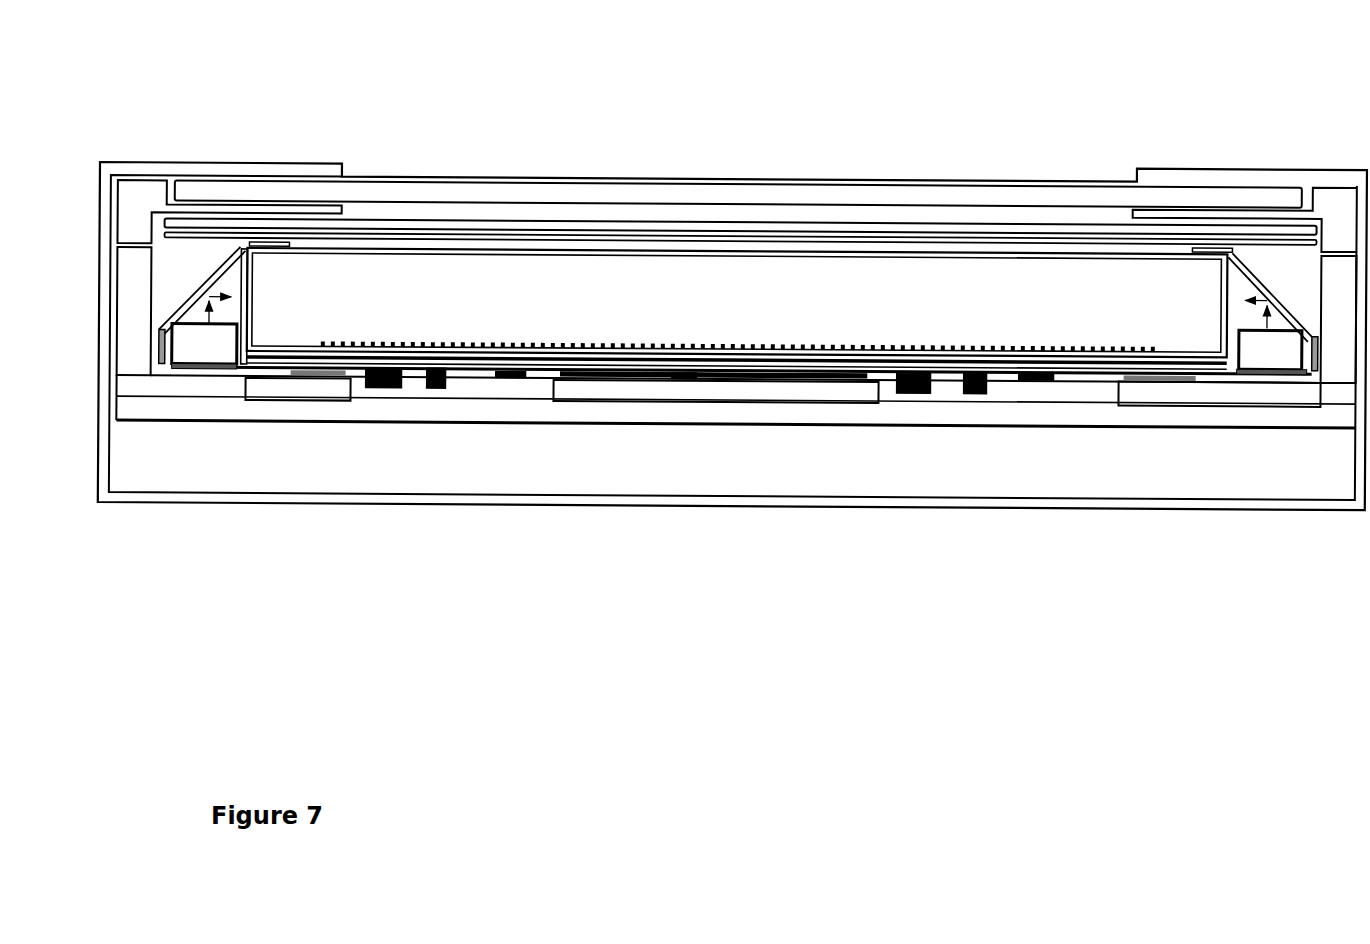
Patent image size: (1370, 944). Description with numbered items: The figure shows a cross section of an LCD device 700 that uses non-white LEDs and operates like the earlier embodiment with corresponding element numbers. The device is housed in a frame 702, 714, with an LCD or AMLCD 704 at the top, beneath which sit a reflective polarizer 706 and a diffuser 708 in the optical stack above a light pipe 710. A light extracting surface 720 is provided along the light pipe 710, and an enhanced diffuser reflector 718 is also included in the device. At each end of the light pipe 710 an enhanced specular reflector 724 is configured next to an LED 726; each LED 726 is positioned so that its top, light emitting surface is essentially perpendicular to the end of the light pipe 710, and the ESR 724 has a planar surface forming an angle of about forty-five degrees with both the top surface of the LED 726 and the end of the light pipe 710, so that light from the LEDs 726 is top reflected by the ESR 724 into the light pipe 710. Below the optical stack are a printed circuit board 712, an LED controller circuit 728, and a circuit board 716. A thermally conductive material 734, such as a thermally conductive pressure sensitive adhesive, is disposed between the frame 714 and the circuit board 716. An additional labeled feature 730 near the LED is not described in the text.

The LCD device 700 is at (1163, 43).
The frame 702 is at (320, 508).
The LCD or AMLCD 704 is at (980, 174).
The reflective polarizer 706 is at (830, 205).
The diffuser 708 is at (741, 243).
The light pipe 710 is at (911, 275).
The printed circuit board 712 is at (643, 410).
The frame 714 is at (710, 398).
The circuit board 716 is at (164, 368).
The enhanced diffuser reflector (EDR) 718 is at (736, 343).
The light extracting surface 720 is at (493, 338).
The enhanced specular reflector (ESR) 724 is at (205, 272).
The LEDs 726 is at (1254, 364).
The LED controller circuit 728 is at (456, 381).
The prism exit face 730 is at (248, 370).
The thermally conductive material 734 is at (1120, 370).